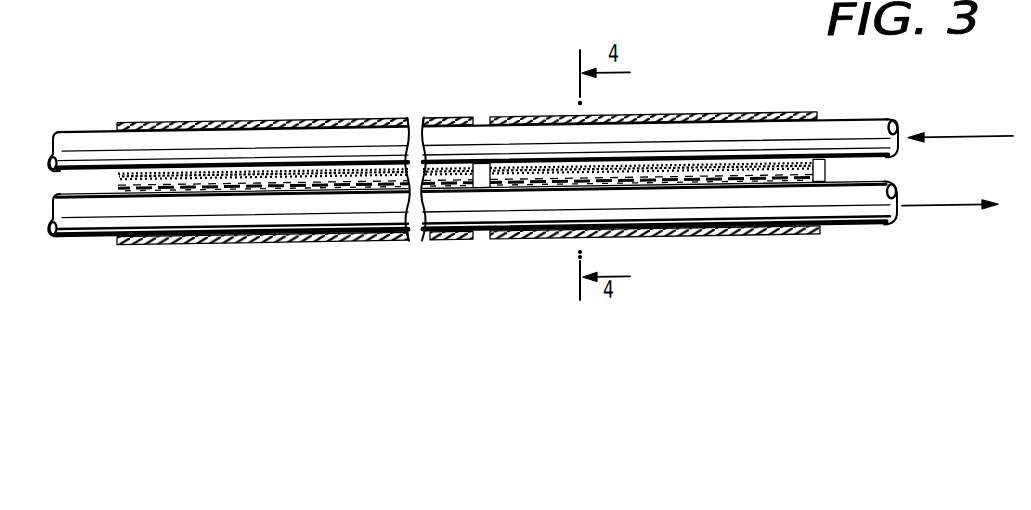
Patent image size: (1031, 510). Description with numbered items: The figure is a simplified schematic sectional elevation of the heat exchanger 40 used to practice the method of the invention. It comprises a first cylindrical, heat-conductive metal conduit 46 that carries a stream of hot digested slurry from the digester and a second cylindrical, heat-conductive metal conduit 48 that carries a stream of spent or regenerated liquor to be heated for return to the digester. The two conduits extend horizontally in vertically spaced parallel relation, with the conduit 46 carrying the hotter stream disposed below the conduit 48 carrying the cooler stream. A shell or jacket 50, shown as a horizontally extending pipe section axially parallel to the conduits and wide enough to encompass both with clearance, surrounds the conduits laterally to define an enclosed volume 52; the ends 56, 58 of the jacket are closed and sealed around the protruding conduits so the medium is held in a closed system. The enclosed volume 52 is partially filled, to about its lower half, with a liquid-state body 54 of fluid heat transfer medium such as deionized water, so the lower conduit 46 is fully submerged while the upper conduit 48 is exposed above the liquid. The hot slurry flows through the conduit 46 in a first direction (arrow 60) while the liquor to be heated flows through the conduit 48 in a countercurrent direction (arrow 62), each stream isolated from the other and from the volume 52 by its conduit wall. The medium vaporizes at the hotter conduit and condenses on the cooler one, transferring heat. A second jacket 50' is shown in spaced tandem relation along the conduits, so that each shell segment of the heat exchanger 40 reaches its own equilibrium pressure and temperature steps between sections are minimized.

The heat exchanger 40 is at (473, 175).
The first conduit 46 is at (847, 233).
The second conduit 48 is at (692, 140).
The jacket 50 is at (621, 195).
The second jacket 50' is at (262, 203).
The enclosed volume 52 is at (717, 176).
The liquid-state body of fluid heat transfer medium 54 is at (672, 193).
The jacket end 56 is at (484, 182).
The jacket end 58 is at (827, 183).
The arrow 60 is at (943, 220).
The arrow 62 is at (962, 151).